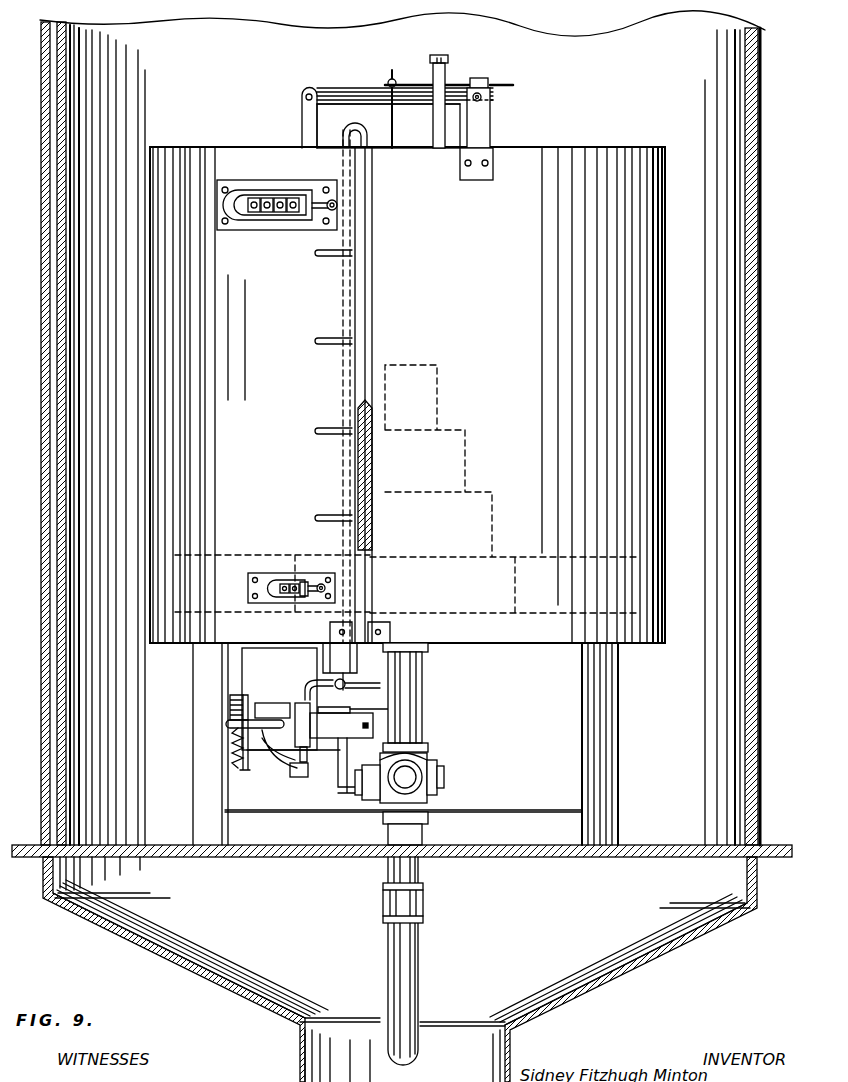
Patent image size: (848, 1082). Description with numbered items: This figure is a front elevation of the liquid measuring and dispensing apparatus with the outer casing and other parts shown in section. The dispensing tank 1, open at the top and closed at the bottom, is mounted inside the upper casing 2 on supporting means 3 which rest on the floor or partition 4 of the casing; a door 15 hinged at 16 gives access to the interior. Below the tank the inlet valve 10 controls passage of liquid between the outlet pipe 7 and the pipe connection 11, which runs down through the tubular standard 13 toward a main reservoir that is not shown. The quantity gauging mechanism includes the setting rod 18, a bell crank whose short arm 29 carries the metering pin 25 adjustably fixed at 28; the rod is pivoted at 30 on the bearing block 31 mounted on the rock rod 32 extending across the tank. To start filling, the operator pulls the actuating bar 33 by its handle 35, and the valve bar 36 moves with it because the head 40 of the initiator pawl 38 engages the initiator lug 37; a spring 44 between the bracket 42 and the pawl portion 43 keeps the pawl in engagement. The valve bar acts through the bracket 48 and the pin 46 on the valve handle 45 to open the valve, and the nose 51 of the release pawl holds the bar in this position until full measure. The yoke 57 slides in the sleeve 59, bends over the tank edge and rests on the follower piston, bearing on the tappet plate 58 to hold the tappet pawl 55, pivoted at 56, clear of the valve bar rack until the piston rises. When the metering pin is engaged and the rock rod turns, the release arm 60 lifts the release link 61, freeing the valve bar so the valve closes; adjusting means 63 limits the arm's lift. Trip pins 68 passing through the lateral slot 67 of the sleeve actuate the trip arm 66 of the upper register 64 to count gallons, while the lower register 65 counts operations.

The dispensing tank 1 is at (621, 155).
The upper casing 2 is at (762, 318).
The supporting means 3 is at (198, 658).
The floor or partition 4 is at (650, 860).
The outlet pipe 7 is at (428, 800).
The inlet valve 10 is at (445, 778).
The pipe connection 11 is at (420, 960).
The tubular standard 13 is at (512, 1044).
The door 15 is at (745, 786).
The hinge 16 is at (40, 684).
The setting rod 18 is at (505, 82).
The metering pin 25 is at (390, 123).
The adjustable fixing 28 is at (390, 82).
The short arm 29 is at (392, 70).
The pivot 30 is at (481, 78).
The bearing block 31 is at (490, 100).
The rock rod 32 is at (478, 100).
The actuating bar 33 is at (232, 714).
The handle 35 is at (230, 726).
The valve bar 36 is at (334, 725).
The initiator lug 37 is at (282, 758).
The initiator pawl 38 is at (295, 778).
The head 40 is at (270, 706).
The bracket 42 is at (245, 772).
The portion of pawl 43 is at (230, 698).
The spring 44 is at (232, 745).
The valve handle 45 is at (395, 712).
The pin 46 is at (340, 705).
The bracket 48 is at (306, 692).
The nose 51 is at (305, 780).
The tappet pawl 55 is at (308, 688).
The pivot 56 is at (340, 658).
The yoke 57 is at (348, 142).
The tappet plate 58 is at (392, 690).
The sleeve 59 is at (490, 132).
The release arm 60 is at (330, 94).
The release link 61 is at (302, 116).
The adjusting means 63 is at (446, 62).
The upper register 64 is at (262, 224).
The lower register 65 is at (278, 578).
The trip arm 66 is at (326, 213).
The lateral slot 67 is at (356, 474).
The trip pins 68 is at (333, 345).